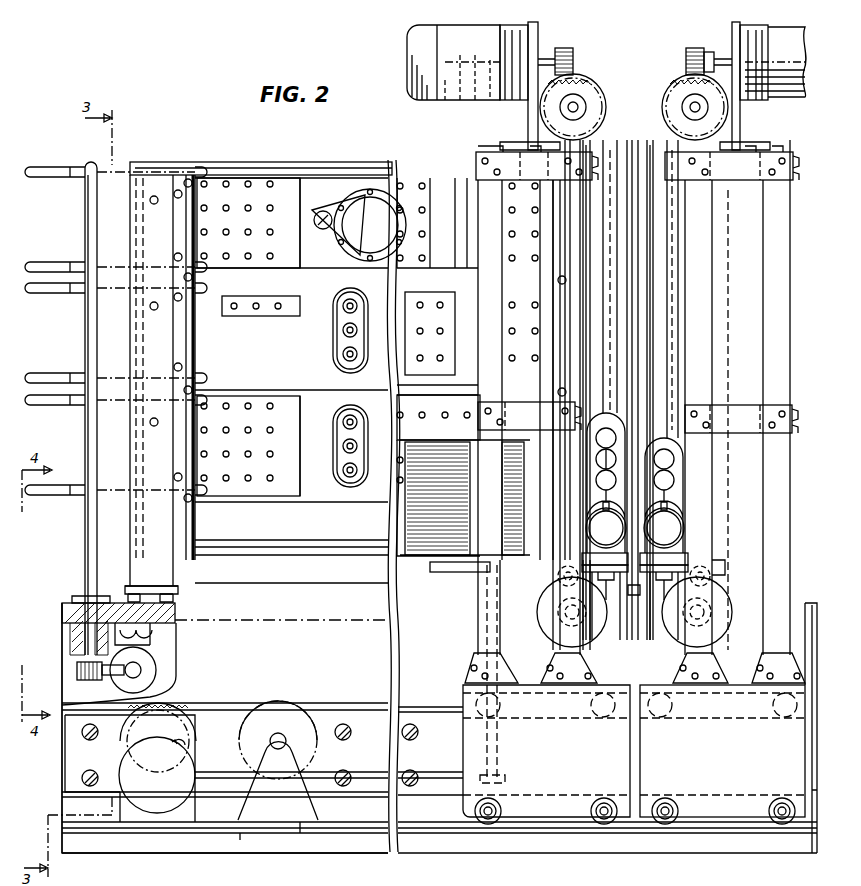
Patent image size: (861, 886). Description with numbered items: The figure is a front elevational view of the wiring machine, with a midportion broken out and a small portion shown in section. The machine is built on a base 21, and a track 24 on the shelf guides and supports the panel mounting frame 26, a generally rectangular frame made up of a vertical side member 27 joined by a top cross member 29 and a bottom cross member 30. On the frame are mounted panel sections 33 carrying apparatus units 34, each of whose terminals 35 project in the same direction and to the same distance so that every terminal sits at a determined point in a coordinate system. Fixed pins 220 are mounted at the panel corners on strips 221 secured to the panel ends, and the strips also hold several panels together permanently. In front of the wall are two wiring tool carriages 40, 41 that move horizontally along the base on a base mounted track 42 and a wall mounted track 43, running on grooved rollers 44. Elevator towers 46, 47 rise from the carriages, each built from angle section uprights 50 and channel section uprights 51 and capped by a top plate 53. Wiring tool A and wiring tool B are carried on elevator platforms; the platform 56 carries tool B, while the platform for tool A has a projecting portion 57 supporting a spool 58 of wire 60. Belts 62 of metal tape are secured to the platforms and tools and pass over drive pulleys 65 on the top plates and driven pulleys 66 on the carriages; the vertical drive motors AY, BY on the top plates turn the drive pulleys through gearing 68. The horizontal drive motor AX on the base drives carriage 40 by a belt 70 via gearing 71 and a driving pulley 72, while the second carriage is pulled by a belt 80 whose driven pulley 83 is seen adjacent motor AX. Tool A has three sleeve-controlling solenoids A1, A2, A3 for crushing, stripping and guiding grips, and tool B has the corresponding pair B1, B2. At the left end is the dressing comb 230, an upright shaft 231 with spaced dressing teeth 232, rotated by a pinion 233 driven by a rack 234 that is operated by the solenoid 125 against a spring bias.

The base 21 is at (632, 852).
The track 24 is at (180, 596).
The panel mounting frame 26 is at (326, 143).
The vertical side member 27 is at (131, 328).
The top cross member 29 is at (343, 165).
The bottom cross member 30 is at (273, 560).
The panel section 33 is at (298, 182).
The apparatus unit 34 is at (352, 252).
The terminal 35 is at (248, 182).
The wiring tool carriage 40 is at (583, 790).
The wiring tool carriage 41 is at (715, 790).
The base mounted track 42 is at (422, 826).
The wall mounted track 43 is at (70, 768).
The grooved roller 44 is at (490, 825).
The elevator tower 46 is at (530, 647).
The elevator tower 47 is at (750, 671).
The angle section upright 50 is at (783, 524).
The channel section upright 51 is at (704, 543).
The top plate 53 is at (478, 156).
The elevator platform 56 is at (720, 566).
The projecting portion 57 is at (452, 572).
The spool 58 is at (451, 443).
The wire 60 is at (434, 553).
The belt 62 is at (655, 324).
The drive pulley 65 is at (604, 92).
The driven pulley 66 is at (549, 634).
The gearing 68 is at (576, 66).
The belt 70 is at (210, 710).
The gearing 71 is at (190, 740).
The driving pulley 72 is at (172, 711).
The belt 80 is at (343, 706).
The driven pulley 83 is at (283, 705).
The solenoid 125 is at (150, 665).
The fixed pin 220 is at (188, 180).
The strip 221 is at (178, 350).
The comb 230 is at (62, 340).
The upright shaft 231 is at (84, 540).
The dressing tooth 232 is at (50, 262).
The pinion 233 is at (77, 666).
The rack 234 is at (115, 676).
The wiring tool A is at (605, 526).
The wiring tool B is at (658, 539).
The solenoid A1 is at (596, 481).
The solenoid A2 is at (596, 460).
The solenoid A3 is at (596, 439).
The solenoid B1 is at (674, 481).
The solenoid B2 is at (674, 460).
The horizontal drive motor AX is at (157, 775).
The vertical drive motor AY is at (481, 86).
The vertical drive motor BY is at (769, 86).